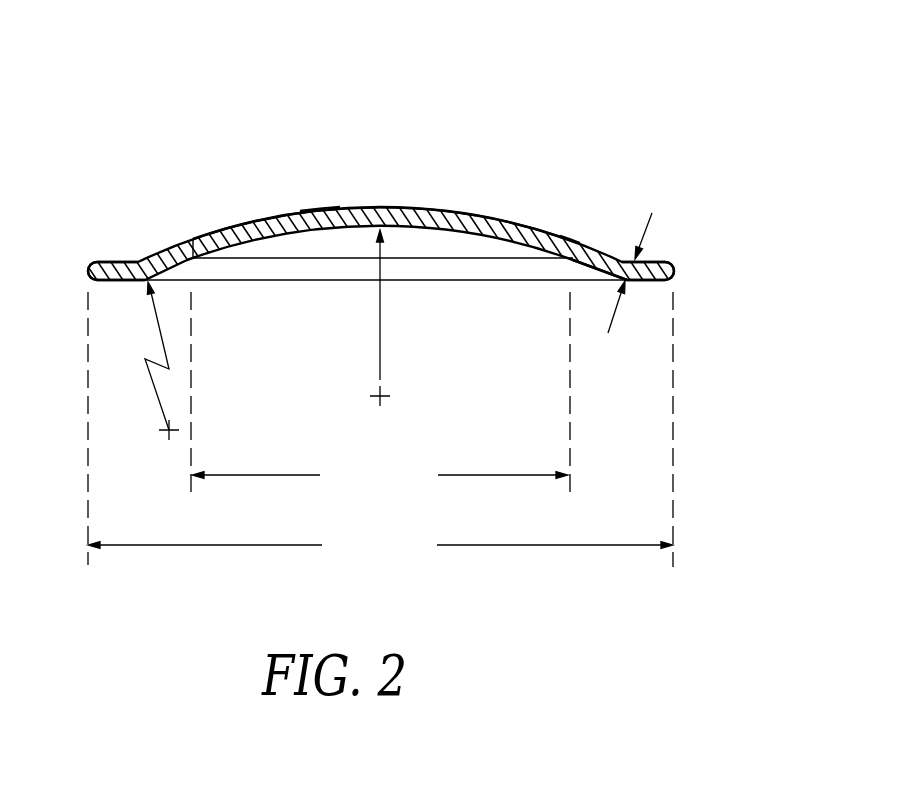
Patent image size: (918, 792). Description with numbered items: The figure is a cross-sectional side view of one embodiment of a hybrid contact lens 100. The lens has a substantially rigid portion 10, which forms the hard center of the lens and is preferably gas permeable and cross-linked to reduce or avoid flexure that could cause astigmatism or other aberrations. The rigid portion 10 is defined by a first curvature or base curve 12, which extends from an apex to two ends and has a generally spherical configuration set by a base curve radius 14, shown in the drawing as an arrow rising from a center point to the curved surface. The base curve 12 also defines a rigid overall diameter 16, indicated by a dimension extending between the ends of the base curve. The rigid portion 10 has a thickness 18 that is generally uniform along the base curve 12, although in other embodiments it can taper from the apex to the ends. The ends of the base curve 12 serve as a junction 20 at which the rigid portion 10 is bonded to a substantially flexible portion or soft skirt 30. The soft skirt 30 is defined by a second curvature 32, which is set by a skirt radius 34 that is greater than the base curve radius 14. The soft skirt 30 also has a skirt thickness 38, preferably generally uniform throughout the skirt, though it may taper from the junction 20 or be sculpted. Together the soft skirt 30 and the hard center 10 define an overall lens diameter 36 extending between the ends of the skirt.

The hybrid contact lens 100 is at (579, 63).
The substantially rigid portion 10 is at (423, 207).
The base curve 12 is at (242, 222).
The base curve radius 14 is at (380, 326).
The rigid overall diameter 16 is at (380, 394).
The thickness 18 is at (318, 200).
The junction 20 is at (567, 220).
The soft skirt 30 is at (602, 248).
The second curvature 32 is at (122, 260).
The skirt radius 34 is at (152, 323).
The overall lens diameter 36 is at (380, 429).
The skirt thickness 38 is at (650, 227).